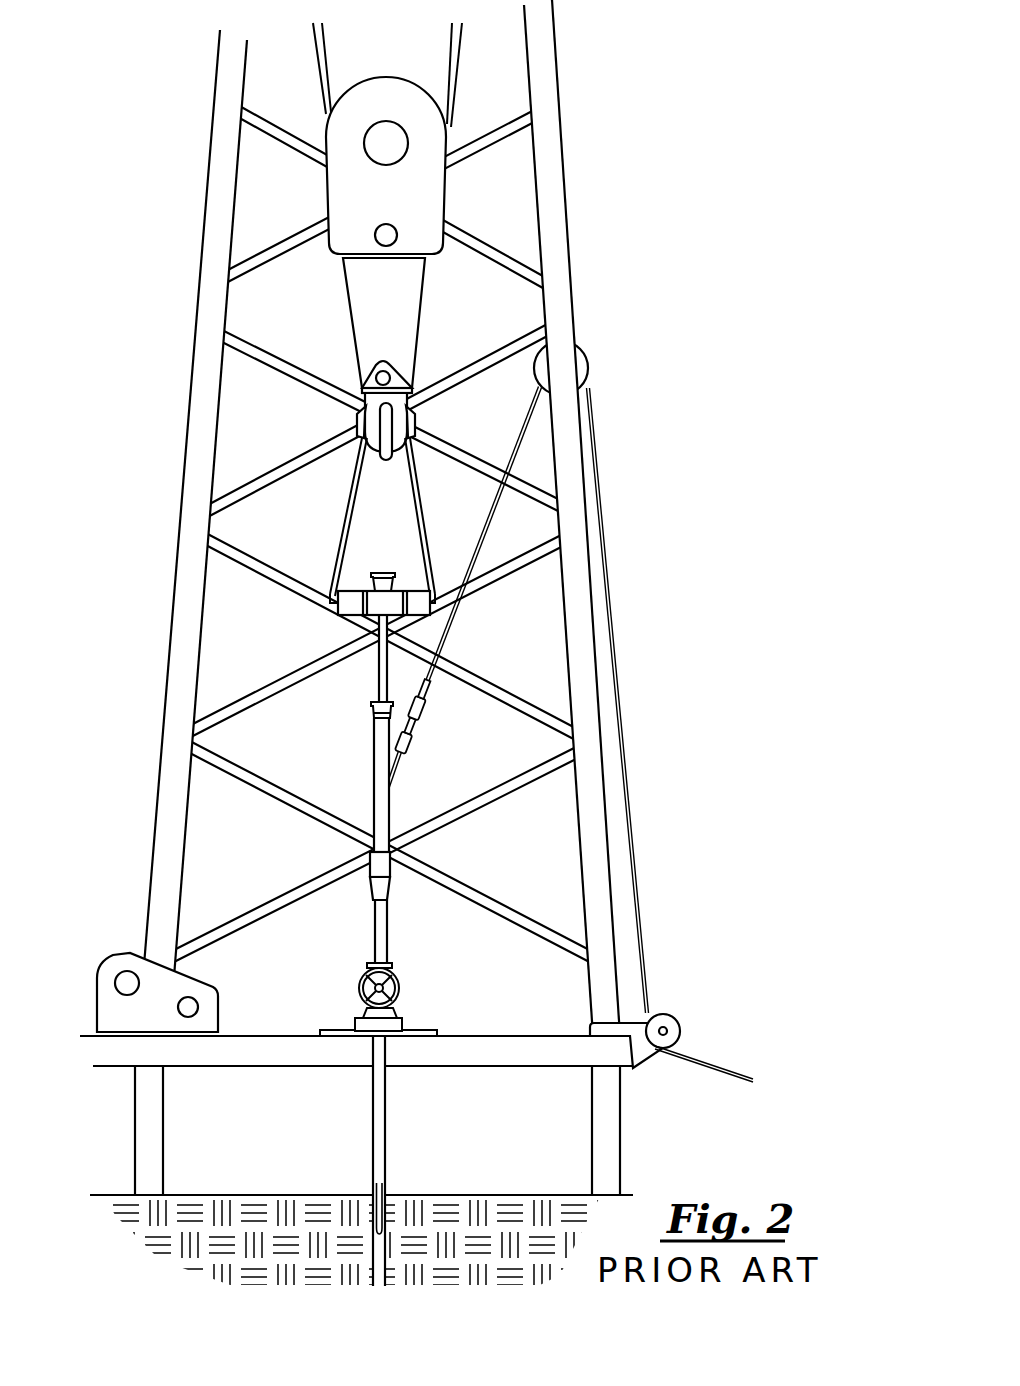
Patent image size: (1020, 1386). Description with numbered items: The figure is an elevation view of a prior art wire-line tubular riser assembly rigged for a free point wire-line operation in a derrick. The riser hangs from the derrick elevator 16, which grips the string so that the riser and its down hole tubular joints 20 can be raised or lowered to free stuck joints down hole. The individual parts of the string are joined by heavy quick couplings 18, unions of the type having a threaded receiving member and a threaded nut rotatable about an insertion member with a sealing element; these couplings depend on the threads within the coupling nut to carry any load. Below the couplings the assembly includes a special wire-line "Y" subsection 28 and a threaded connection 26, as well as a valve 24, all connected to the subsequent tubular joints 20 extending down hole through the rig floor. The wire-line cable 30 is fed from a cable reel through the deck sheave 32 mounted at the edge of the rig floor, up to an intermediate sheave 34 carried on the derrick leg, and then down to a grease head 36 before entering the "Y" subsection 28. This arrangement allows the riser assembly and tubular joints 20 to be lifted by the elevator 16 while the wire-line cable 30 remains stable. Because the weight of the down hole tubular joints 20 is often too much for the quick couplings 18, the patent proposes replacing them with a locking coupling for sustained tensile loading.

The elevator 16 is at (336, 614).
The quick coupling 18 is at (380, 573).
The tubular joint 20 is at (387, 1146).
The valve 24 is at (400, 982).
The threaded connection 26 is at (375, 878).
The "Y" subsection 28 is at (374, 797).
The wire-line cable 30 is at (617, 667).
The deck sheave 32 is at (667, 1013).
The intermediate sheave 34 is at (587, 357).
The grease head 36 is at (422, 714).